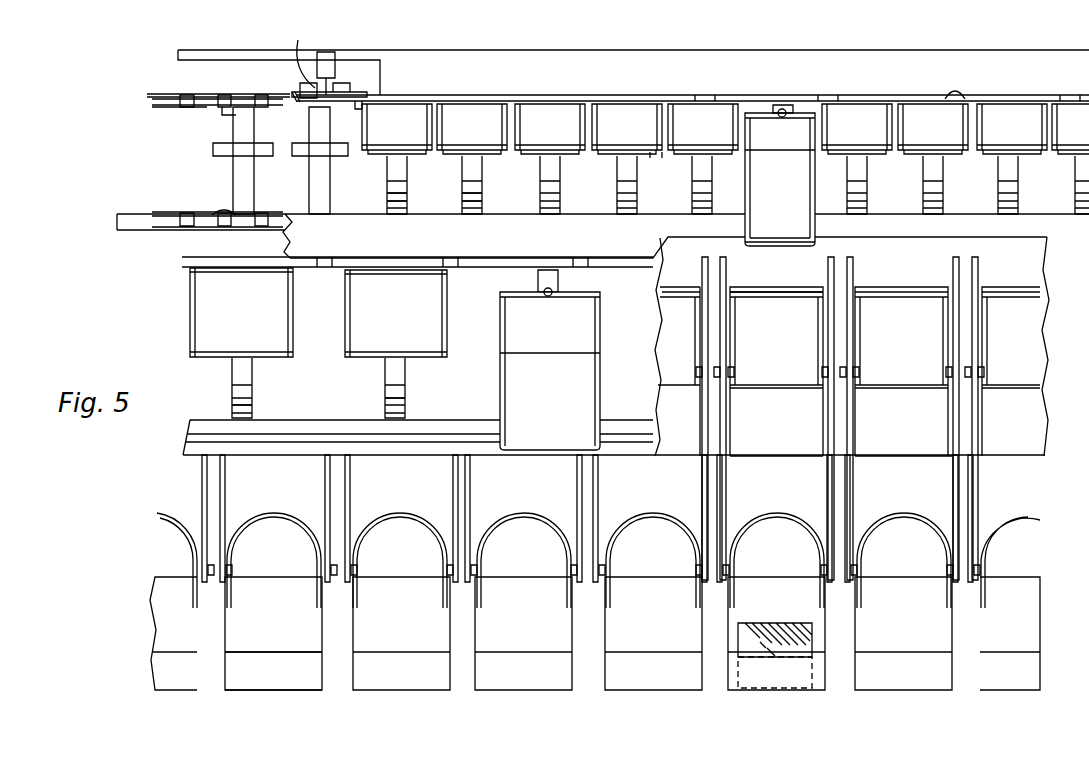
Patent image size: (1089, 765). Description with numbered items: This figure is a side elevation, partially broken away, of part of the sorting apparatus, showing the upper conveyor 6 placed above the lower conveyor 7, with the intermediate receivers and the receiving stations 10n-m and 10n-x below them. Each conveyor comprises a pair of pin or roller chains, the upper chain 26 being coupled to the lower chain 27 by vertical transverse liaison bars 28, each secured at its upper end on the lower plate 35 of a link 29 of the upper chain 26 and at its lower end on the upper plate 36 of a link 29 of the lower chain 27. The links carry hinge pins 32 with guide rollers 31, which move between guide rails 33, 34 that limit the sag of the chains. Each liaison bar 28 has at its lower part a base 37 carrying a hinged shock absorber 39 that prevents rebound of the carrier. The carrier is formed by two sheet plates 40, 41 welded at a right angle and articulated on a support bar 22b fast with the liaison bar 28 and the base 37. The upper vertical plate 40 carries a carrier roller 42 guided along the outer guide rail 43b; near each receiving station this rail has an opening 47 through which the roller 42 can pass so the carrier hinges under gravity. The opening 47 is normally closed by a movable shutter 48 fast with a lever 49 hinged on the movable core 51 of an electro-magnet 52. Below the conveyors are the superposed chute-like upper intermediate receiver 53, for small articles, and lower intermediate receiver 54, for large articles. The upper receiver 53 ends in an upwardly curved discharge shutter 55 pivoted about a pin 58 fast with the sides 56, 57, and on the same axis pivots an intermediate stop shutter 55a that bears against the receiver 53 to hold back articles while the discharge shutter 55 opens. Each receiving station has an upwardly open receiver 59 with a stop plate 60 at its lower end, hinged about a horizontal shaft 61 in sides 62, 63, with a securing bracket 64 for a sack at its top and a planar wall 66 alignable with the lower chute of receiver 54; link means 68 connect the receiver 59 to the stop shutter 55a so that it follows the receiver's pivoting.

The conveyor 6 is at (180, 141).
The conveyor 7 is at (176, 337).
The receiving station 10n-m is at (400, 673).
The receiving station 10n-x is at (902, 673).
The support bar 22b is at (648, 160).
The upper chain 26 is at (150, 97).
The lower chain 27 is at (162, 212).
The liaison bar 28 is at (274, 377).
The link 29 is at (228, 94).
The guide roller 31 is at (263, 94).
The hinge pin 32 is at (184, 94).
The guide rail 33 is at (125, 228).
The guide rail 34 is at (278, 228).
The lower plate 35 is at (226, 112).
The upper plate 36 is at (205, 228).
The base 37 is at (422, 396).
The shock absorber 39 is at (274, 401).
The upper vertical plate 40 is at (627, 143).
The horizontal plate 41 is at (598, 153).
The carrier roller 42 is at (782, 105).
The outer guide rail 43b is at (633, 257).
The opening 47 is at (955, 92).
The movable shutter 48 is at (568, 258).
The lever 49 is at (343, 84).
The movable core 51 is at (296, 55).
The electro-magnet 52 is at (330, 48).
The upper intermediate receiver 53 is at (899, 281).
The lower intermediate receiver 54 is at (276, 506).
The discharge shutter 55 is at (792, 453).
The intermediate stop shutter 55a is at (778, 290).
The side 56 is at (852, 360).
The side 57 is at (953, 312).
The pin 58 is at (972, 370).
The receiver 59 is at (252, 648).
The stop plate 60 is at (270, 673).
The horizontal shaft 61 is at (338, 580).
The side 62 is at (218, 465).
The side 63 is at (326, 477).
The securing bracket 64 is at (920, 525).
The planar wall 66 is at (264, 630).
The link means 68 is at (350, 495).